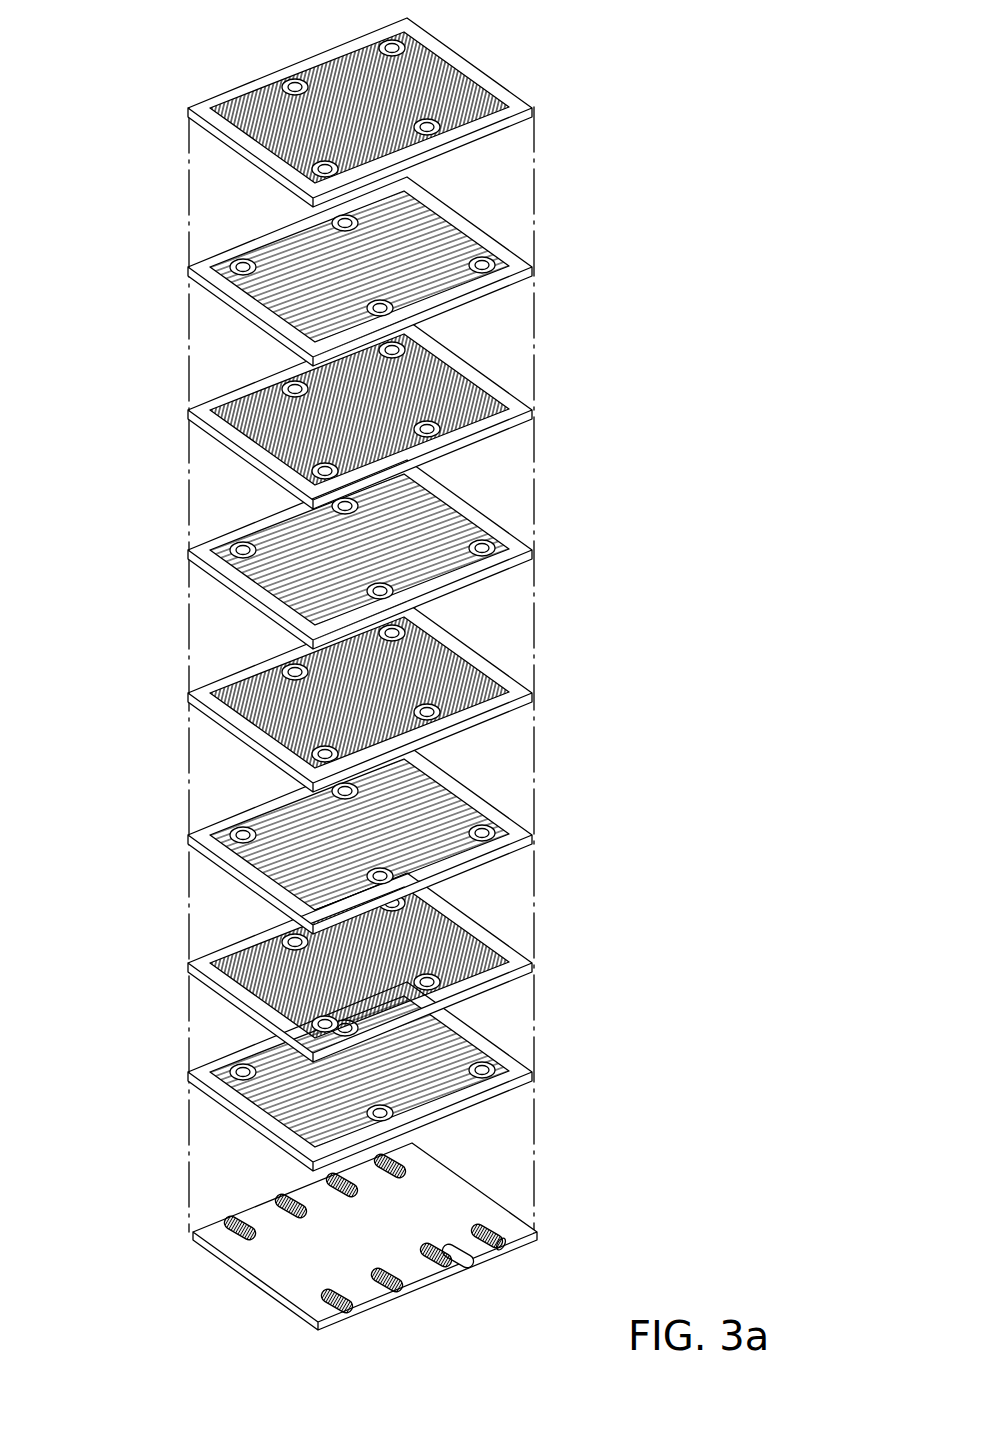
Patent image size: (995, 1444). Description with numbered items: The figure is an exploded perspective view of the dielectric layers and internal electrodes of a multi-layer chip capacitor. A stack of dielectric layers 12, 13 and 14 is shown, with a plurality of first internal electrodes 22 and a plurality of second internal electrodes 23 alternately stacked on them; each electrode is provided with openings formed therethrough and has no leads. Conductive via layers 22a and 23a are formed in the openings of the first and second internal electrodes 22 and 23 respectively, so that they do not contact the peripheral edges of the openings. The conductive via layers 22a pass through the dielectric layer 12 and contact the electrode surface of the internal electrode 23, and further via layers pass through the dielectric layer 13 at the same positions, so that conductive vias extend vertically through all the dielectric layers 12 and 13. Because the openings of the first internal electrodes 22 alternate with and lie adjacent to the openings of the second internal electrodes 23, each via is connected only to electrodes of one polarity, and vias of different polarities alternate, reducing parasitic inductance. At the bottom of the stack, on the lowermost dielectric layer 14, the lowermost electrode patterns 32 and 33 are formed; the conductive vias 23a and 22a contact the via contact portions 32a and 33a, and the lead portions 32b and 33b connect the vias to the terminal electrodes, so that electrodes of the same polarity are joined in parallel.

The dielectric layer 12 is at (346, 540).
The dielectric layer 13 is at (341, 655).
The dielectric layer 14 is at (373, 1254).
The first internal electrode 22 is at (249, 106).
The conductive via layer 22a is at (291, 80).
The second internal electrode 23 is at (430, 213).
The conductive via layer 23a is at (235, 262).
The lowermost electrode pattern 32 is at (228, 1233).
The via contact portion 32a is at (510, 1220).
The lead portion 32b is at (518, 1242).
The lowermost electrode pattern 33 is at (280, 1210).
The via contact portion 33a is at (458, 1262).
The lead portion 33b is at (465, 1270).